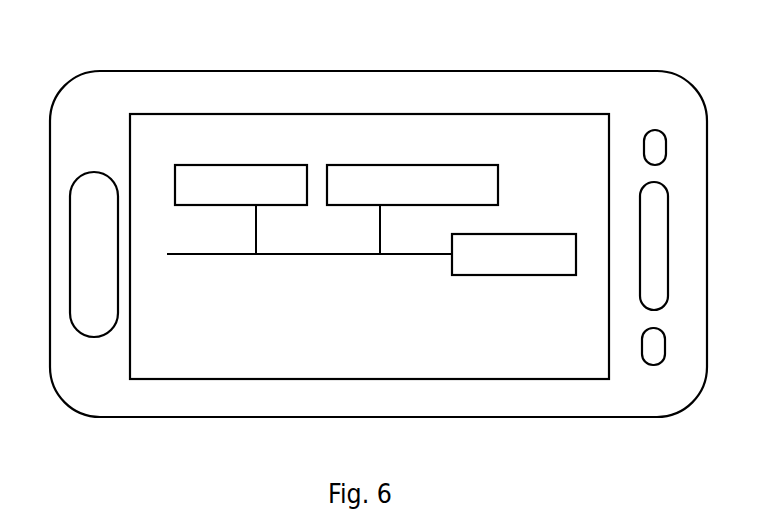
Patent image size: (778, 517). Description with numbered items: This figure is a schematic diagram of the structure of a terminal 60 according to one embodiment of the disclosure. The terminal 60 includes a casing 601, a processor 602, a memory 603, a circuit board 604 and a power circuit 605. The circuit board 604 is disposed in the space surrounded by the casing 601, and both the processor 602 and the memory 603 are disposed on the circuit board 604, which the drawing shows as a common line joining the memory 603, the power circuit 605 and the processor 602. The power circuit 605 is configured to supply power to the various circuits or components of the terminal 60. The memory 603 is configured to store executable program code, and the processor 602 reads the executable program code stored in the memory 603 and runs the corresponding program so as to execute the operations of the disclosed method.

The terminal 60 is at (367, 208).
The casing 601 is at (520, 71).
The processor 602 is at (513, 234).
The memory 603 is at (240, 165).
The circuit board 604 is at (307, 254).
The power circuit 605 is at (413, 164).